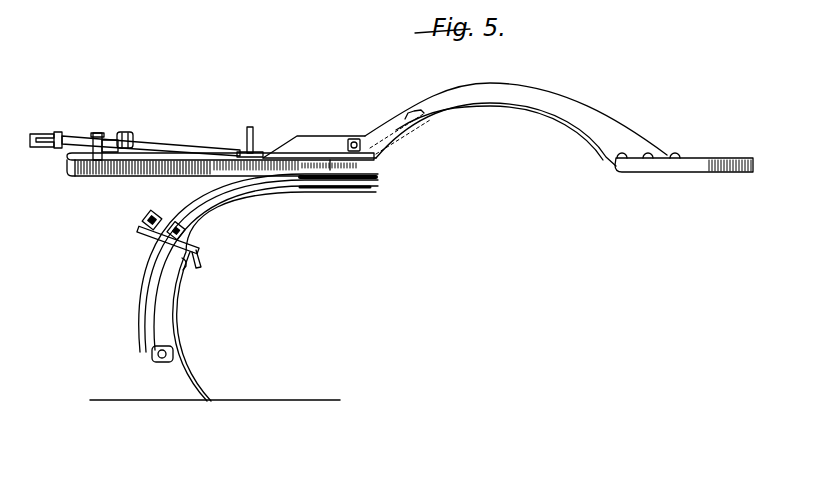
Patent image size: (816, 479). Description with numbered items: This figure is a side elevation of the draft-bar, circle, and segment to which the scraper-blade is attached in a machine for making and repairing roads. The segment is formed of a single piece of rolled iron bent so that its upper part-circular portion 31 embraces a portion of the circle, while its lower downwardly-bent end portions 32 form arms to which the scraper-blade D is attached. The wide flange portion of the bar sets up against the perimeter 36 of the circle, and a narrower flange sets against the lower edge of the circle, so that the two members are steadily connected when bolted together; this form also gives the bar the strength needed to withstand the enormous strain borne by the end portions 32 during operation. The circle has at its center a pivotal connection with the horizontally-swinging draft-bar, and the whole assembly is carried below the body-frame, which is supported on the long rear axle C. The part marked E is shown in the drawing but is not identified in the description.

The arched spring arm with plate and end block 31 is at (508, 148).
The curved guide rods with lower clamp 32 is at (130, 297).
The toothed rack bar with adjusting post and rod 36 is at (160, 167).
The toothed slat C is at (221, 177).
The lower curved arm D is at (274, 296).
The sliding bracket E is at (192, 222).